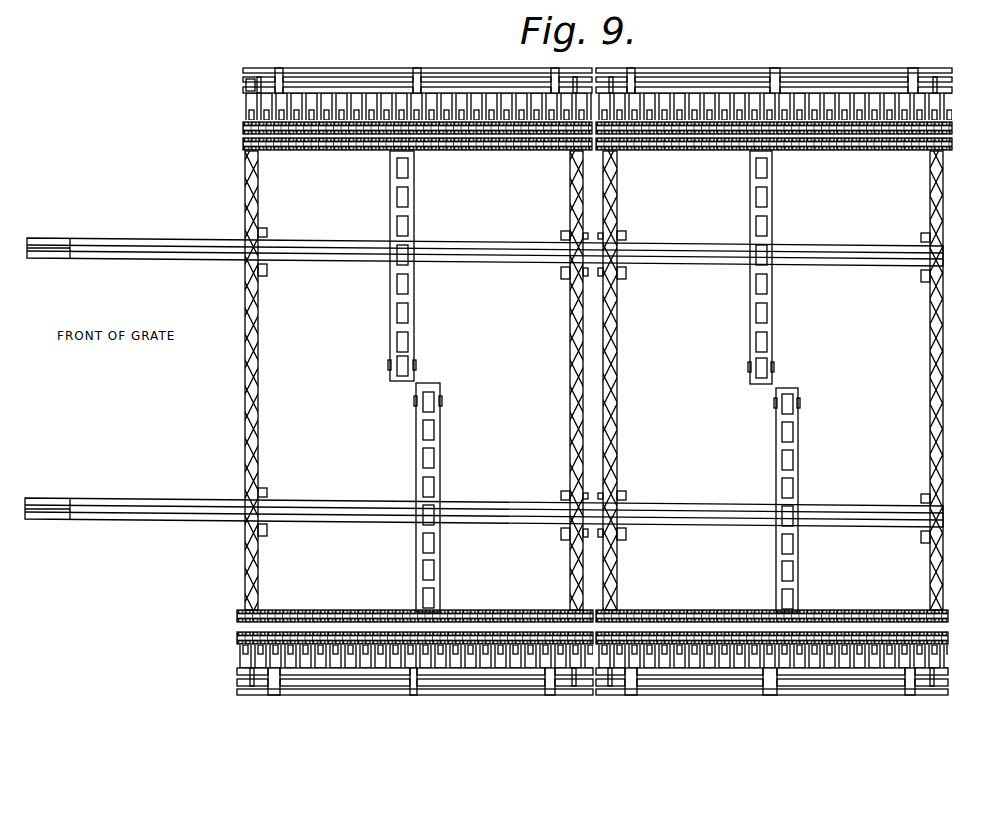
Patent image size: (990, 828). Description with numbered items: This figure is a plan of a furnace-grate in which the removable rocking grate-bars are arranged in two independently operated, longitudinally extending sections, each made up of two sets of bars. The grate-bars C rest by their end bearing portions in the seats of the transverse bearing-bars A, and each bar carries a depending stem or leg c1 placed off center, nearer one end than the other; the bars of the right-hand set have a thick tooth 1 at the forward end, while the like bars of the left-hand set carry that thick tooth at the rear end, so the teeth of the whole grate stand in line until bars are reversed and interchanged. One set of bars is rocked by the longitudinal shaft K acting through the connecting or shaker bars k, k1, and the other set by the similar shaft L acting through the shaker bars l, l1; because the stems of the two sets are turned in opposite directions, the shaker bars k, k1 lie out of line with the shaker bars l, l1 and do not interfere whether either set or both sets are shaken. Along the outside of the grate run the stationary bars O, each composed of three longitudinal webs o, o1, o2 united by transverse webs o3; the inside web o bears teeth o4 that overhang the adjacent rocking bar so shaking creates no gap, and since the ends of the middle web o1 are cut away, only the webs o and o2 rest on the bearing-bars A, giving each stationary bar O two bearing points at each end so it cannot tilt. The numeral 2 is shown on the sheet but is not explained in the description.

The outside or stationary bar O is at (417, 91).
The inside bar or longitudinally-extending web o is at (856, 118).
The middle bar or web o1 is at (500, 87).
The outer bar or web o2 is at (399, 76).
The transverse web o3 is at (418, 97).
The teeth o4 is at (273, 118).
The stem or leg c1 is at (318, 154).
The grate-bar C is at (498, 610).
The bearing-bar A is at (258, 303).
The thick tooth 1 is at (574, 160).
The frame section 2 is at (243, 139).
The rocking shaft K is at (165, 247).
The rocking shaft L is at (135, 505).
The connecting or shaker bar k is at (415, 297).
The connecting or shaker bar k1 is at (772, 293).
The connecting or shaker bar l is at (440, 467).
The connecting or shaker bar l1 is at (798, 465).